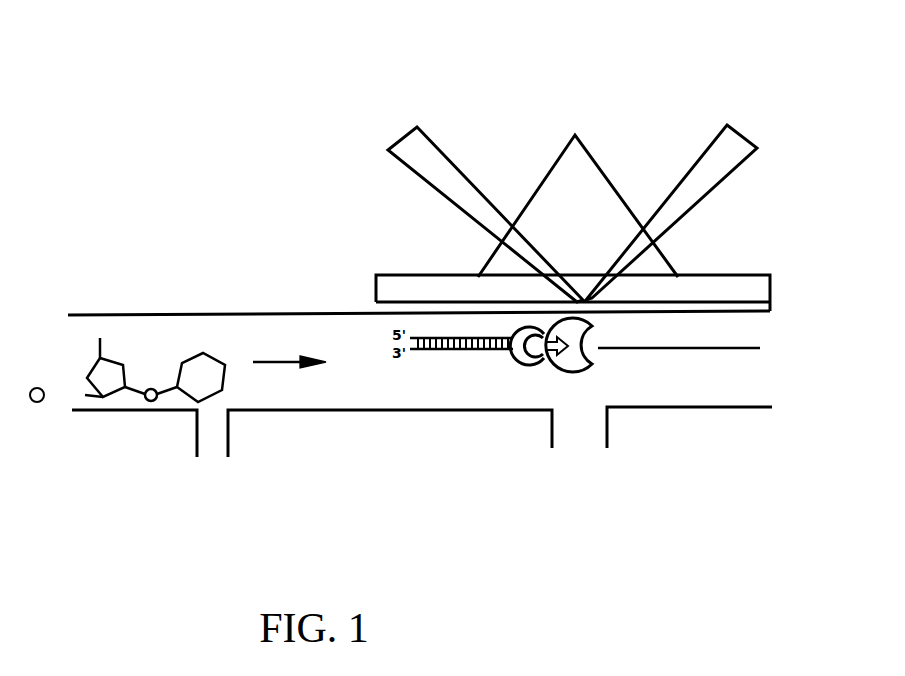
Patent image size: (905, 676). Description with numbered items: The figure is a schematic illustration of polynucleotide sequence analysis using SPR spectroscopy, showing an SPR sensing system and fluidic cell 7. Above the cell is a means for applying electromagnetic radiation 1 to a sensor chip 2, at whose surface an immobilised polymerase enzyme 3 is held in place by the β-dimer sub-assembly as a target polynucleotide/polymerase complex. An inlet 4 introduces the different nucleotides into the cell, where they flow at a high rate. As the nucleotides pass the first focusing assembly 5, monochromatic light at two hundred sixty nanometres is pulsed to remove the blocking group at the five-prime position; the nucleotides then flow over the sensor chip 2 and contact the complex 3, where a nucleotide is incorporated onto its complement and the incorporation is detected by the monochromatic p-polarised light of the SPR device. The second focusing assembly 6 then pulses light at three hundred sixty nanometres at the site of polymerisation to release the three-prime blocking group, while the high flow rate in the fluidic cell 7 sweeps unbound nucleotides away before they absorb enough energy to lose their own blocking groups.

The means for applying electromagnetic radiation 1 is at (442, 140).
The sensor chip 2 is at (742, 272).
The immobilised polymerase enzyme 3 is at (532, 365).
The inlet 4 is at (110, 317).
The focusing assembly 5 is at (208, 423).
The focusing assembly 6 is at (575, 433).
The fluidic cell 7 is at (228, 298).